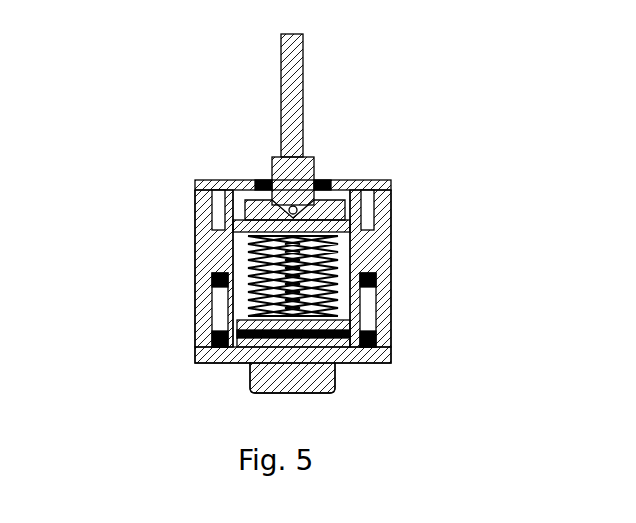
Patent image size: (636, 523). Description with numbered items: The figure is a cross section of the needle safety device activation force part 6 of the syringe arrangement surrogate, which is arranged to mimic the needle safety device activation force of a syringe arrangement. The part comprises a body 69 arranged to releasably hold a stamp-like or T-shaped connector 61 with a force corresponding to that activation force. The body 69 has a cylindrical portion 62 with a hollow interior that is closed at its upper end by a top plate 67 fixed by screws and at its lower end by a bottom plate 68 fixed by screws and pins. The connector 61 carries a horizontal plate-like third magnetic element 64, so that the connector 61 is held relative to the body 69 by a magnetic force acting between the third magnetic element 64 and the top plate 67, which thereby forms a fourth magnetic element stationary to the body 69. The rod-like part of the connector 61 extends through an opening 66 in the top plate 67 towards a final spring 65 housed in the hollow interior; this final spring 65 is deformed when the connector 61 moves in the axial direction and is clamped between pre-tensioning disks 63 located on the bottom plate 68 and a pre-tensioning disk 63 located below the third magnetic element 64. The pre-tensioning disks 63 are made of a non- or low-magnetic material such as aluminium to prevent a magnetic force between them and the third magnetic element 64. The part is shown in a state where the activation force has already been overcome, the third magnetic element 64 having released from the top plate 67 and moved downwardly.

The needle safety device activation force part 6 is at (505, 115).
The connector 61 is at (290, 87).
The cylindrical portion 62 is at (205, 275).
The pre-tensioning disks 63 is at (345, 222).
The third magnetic element 64 is at (327, 208).
The final spring 65 is at (337, 283).
The opening 66 is at (263, 187).
The top plate 67 is at (195, 185).
The bottom plate 68 is at (205, 355).
The body 69 is at (182, 234).